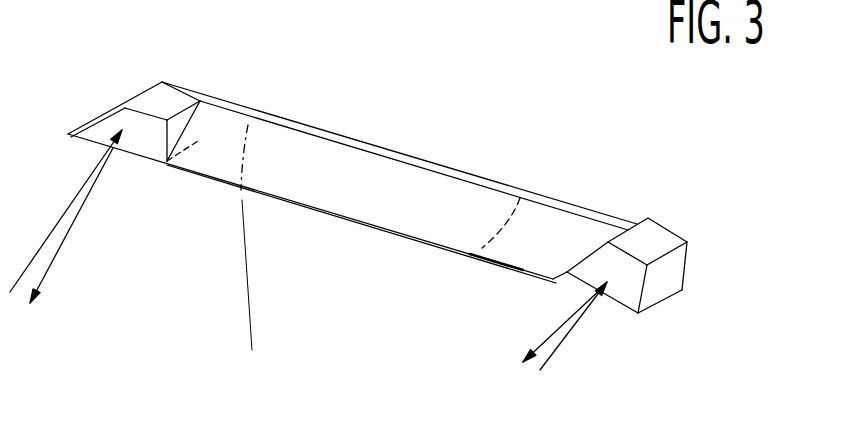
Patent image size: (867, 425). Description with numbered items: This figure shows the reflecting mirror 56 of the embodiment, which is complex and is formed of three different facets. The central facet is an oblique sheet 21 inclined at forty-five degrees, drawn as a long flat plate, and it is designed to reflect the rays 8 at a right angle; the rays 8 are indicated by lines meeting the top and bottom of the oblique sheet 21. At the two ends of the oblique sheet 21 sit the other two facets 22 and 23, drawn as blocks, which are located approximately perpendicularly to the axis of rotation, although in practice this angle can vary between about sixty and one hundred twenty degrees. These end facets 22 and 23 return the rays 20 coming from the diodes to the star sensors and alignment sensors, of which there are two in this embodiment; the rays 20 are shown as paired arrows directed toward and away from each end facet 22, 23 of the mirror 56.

The rays 8 is at (259, 106).
The rays 20 is at (58, 247).
The oblique sheet 21 is at (210, 157).
The facet 22 is at (113, 124).
The facet 23 is at (623, 277).
The reflecting mirror 56 is at (438, 113).